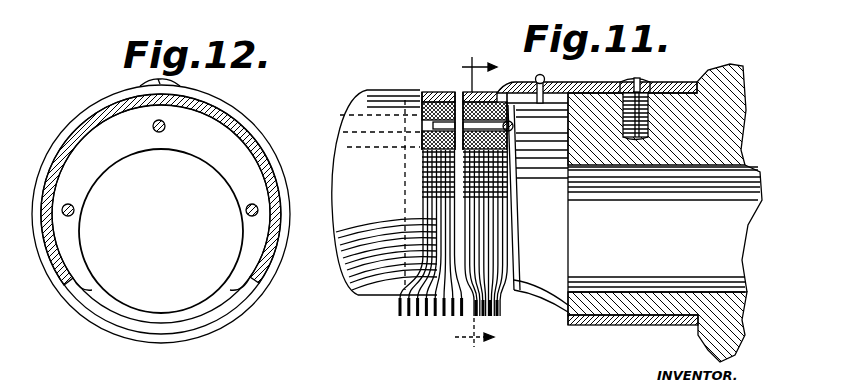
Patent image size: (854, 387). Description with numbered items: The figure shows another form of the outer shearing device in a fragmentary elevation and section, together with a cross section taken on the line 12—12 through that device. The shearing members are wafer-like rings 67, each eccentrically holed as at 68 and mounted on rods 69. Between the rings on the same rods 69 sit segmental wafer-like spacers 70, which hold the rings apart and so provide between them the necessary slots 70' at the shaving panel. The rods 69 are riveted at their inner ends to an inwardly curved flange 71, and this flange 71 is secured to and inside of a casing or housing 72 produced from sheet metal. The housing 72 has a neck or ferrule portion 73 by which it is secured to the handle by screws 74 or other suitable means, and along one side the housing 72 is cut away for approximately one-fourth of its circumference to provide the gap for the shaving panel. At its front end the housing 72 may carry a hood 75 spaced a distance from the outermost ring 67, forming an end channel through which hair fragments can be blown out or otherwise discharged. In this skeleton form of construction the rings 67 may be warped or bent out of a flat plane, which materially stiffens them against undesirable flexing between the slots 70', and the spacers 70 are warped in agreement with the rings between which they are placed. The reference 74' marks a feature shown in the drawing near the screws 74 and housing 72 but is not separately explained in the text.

In FIG. 11, the section line 12— 12 is at (481, 205).
In FIG. 12, the wafer-like rings 67 is at (92, 285).
In FIG. 11, the wafer-like rings 67 is at (494, 246).
In FIG. 12, the eccentric hole 68 is at (118, 292).
In FIG. 12, the rods 69 is at (159, 132).
In FIG. 11, the rods 69 is at (497, 130).
In FIG. 12, the segmental wafer-like spacers 70 is at (173, 214).
In FIG. 11, the segmental wafer-like spacers 70 is at (457, 105).
In FIG. 11, the slots 70' is at (469, 331).
In FIG. 11, the inwardly curved flange 71 is at (536, 196).
In FIG. 12, the casing or housing 72 is at (224, 112).
In FIG. 11, the casing or housing 72 is at (537, 86).
In FIG. 11, the neck or ferrule portion 73 is at (596, 89).
In FIG. 12, the screws 74 is at (161, 211).
In FIG. 11, the screws 74 is at (629, 207).
In FIG. 11, the housing shoulder 74' is at (569, 280).
In FIG. 11, the hood 75 is at (350, 163).